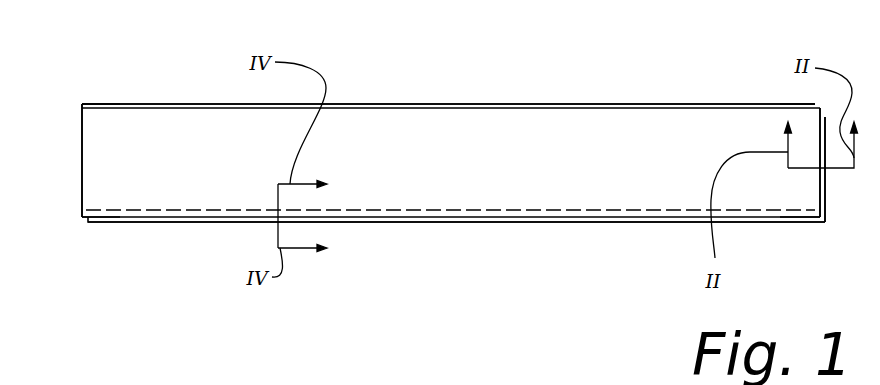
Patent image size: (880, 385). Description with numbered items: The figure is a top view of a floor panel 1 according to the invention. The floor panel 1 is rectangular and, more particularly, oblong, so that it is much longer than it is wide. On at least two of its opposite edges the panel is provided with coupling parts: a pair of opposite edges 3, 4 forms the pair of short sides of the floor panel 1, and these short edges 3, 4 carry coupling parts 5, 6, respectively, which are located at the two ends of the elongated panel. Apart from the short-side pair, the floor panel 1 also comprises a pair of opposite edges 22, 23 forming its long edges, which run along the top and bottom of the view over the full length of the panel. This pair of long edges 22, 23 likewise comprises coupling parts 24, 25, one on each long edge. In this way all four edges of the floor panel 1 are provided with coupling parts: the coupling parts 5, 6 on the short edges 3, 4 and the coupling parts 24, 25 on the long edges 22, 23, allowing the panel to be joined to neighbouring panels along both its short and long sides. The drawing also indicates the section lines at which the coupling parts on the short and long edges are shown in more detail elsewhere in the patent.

The floor panel 1 is at (454, 174).
The opposite edge 3 is at (66, 119).
The opposite edge 4 is at (839, 216).
The coupling part 5 is at (82, 190).
The coupling part 6 is at (820, 185).
The opposite edge 22 is at (527, 86).
The opposite edge 23 is at (491, 242).
The coupling part 24 is at (422, 106).
The coupling part 25 is at (402, 220).